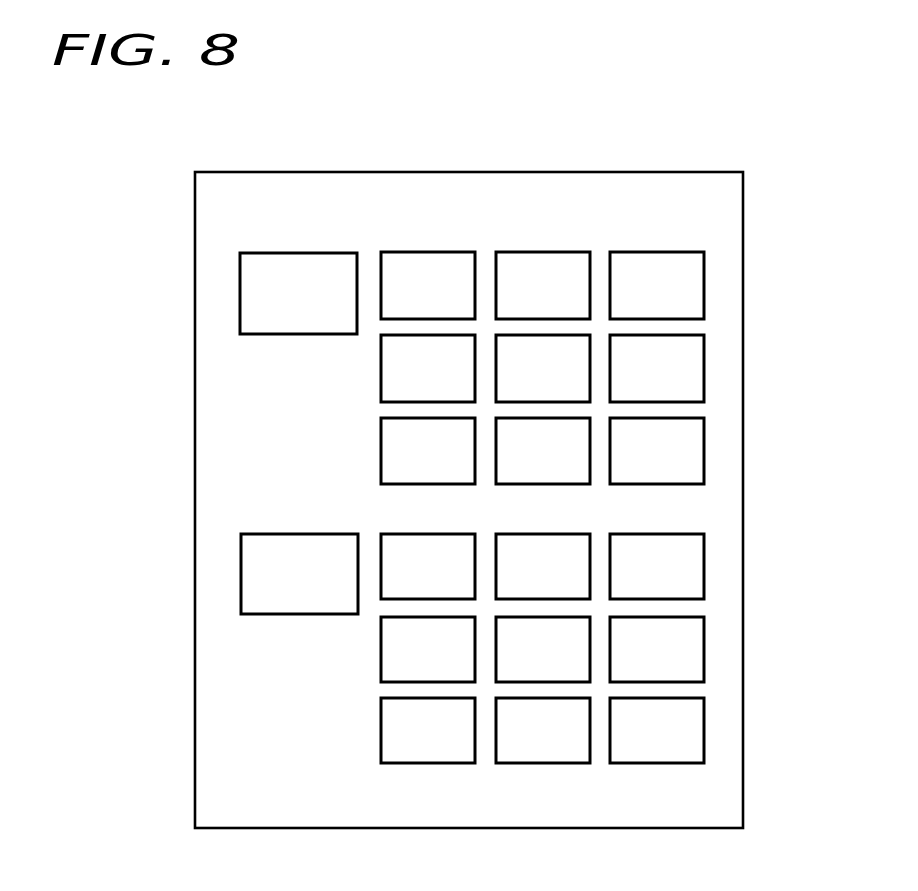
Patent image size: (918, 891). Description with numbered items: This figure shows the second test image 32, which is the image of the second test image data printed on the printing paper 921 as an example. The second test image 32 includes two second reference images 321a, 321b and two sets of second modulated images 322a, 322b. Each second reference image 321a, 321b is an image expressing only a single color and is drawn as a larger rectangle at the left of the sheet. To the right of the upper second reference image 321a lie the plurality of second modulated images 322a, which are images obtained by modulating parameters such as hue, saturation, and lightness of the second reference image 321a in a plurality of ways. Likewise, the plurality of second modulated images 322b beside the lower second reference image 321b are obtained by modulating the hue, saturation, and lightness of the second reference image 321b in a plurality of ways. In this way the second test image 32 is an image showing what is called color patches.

The second test image 32 is at (305, 124).
The printing paper 921 is at (508, 171).
The second reference image 321a is at (217, 297).
The second reference image 321b is at (221, 575).
The second modulated images 322a is at (713, 348).
The second modulated images 322b is at (713, 645).